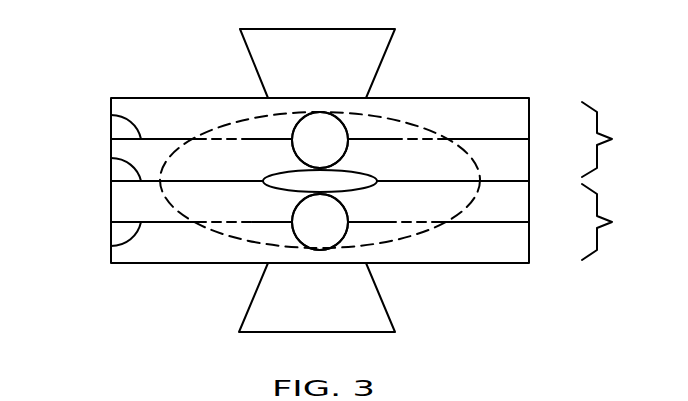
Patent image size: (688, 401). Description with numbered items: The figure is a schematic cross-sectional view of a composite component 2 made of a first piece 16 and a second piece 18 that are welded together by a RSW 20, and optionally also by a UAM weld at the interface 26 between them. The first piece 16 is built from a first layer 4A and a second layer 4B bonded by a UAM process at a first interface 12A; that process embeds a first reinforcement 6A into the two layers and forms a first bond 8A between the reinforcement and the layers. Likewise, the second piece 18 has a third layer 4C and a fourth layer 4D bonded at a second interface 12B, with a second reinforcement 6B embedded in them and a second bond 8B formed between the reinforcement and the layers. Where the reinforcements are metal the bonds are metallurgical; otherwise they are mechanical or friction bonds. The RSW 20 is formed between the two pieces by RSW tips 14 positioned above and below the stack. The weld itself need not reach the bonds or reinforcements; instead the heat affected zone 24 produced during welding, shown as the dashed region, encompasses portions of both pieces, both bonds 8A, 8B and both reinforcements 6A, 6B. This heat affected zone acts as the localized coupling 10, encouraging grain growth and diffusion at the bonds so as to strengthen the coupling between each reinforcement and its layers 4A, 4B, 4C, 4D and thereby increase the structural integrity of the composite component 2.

The composite component 2 is at (578, 53).
The first layer 4A is at (508, 121).
The second layer 4B is at (508, 162).
The third layer 4C is at (508, 203).
The fourth layer 4D is at (508, 244).
The first reinforcement 6A is at (313, 138).
The second reinforcement 6B is at (323, 232).
The first bond 8A is at (347, 128).
The second bond 8B is at (294, 233).
The localized coupling 10 is at (257, 211).
The heat affected zone 24 is at (213, 232).
The first interface 12A is at (111, 115).
The second interface 12B is at (111, 246).
The RSW tips 14 is at (263, 53).
The first piece 16 is at (613, 139).
The second piece 18 is at (613, 222).
The RSW 20 is at (289, 183).
The interface 26 is at (111, 158).